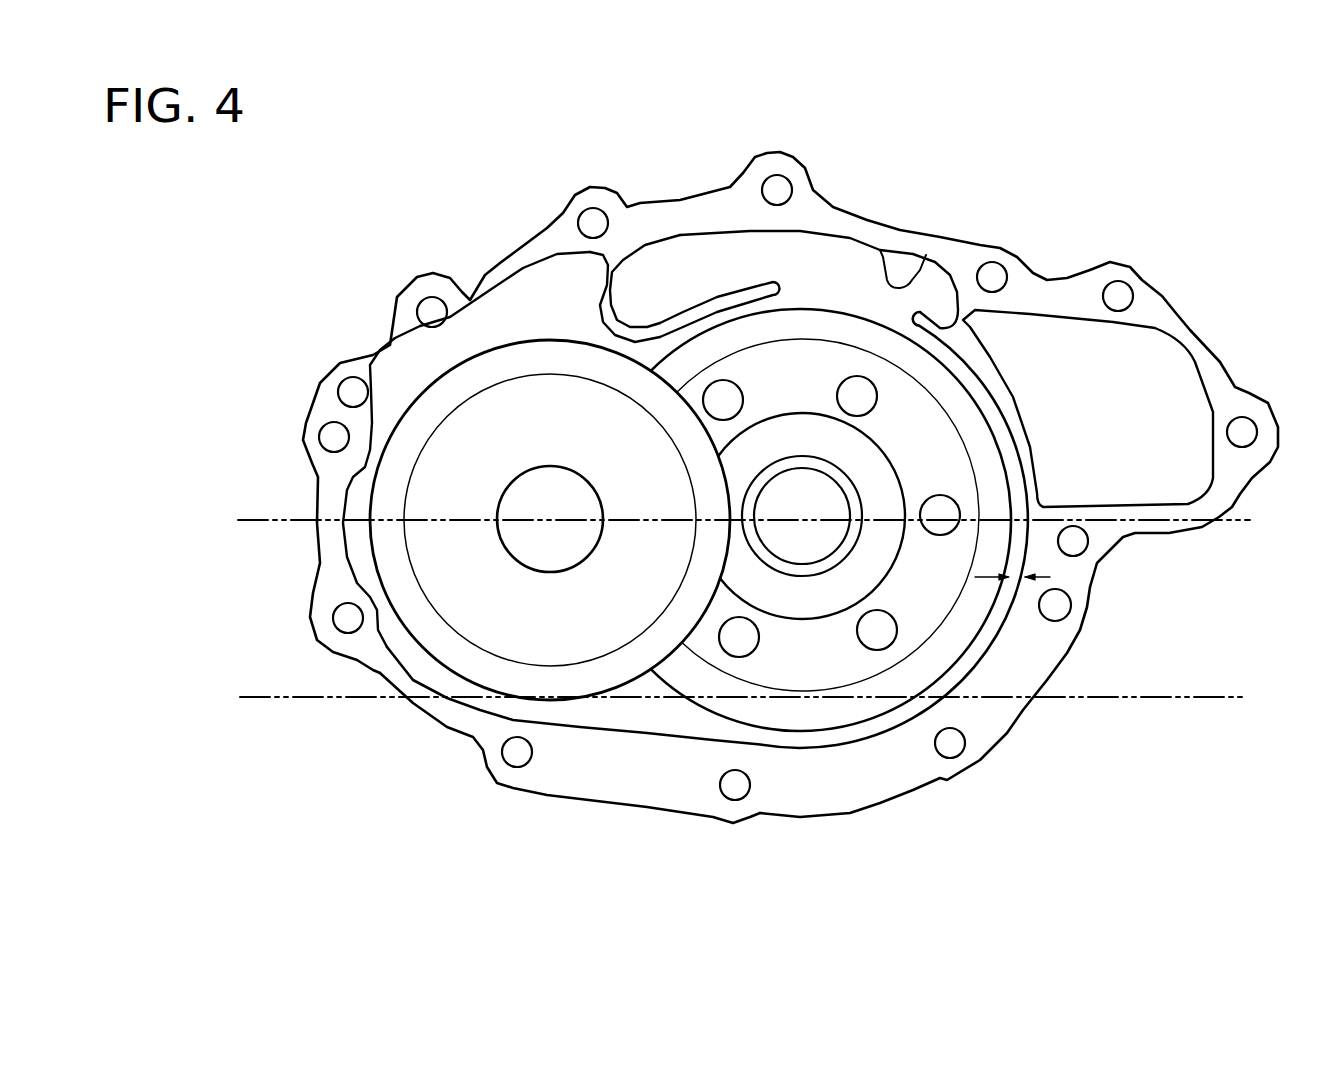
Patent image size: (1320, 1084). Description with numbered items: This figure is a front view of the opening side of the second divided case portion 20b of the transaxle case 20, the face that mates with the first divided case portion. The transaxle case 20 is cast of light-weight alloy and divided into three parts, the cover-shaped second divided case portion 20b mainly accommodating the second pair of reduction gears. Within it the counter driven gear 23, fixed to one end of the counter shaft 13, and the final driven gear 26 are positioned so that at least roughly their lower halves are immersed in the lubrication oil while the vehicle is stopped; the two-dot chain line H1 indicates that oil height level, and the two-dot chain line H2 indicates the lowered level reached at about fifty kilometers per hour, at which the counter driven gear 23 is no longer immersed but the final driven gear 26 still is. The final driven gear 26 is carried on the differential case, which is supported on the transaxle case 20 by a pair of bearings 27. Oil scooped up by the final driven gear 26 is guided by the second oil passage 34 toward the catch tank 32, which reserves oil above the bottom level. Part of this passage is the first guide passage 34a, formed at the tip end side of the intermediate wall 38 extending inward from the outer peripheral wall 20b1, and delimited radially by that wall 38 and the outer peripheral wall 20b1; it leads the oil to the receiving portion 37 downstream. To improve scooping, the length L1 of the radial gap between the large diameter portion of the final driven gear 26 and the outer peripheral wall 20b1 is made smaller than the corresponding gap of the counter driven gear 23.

The counter shaft 13 is at (528, 541).
The transaxle case 20 is at (790, 513).
The second divided case portion 20b is at (493, 792).
The outer peripheral wall 20b1 is at (917, 275).
The counter driven gear 23 is at (438, 416).
The final driven gear 26 is at (927, 587).
The bearings 27 is at (815, 597).
The catch tank 32 is at (1096, 416).
The second oil passage 34 is at (843, 232).
The first guide passage 34a is at (746, 283).
The receiving portion 37 is at (630, 322).
The intermediate wall 38 is at (602, 290).
The height level H1 is at (722, 522).
The height level H2 is at (720, 697).
The length of radial gap L1 is at (1010, 577).